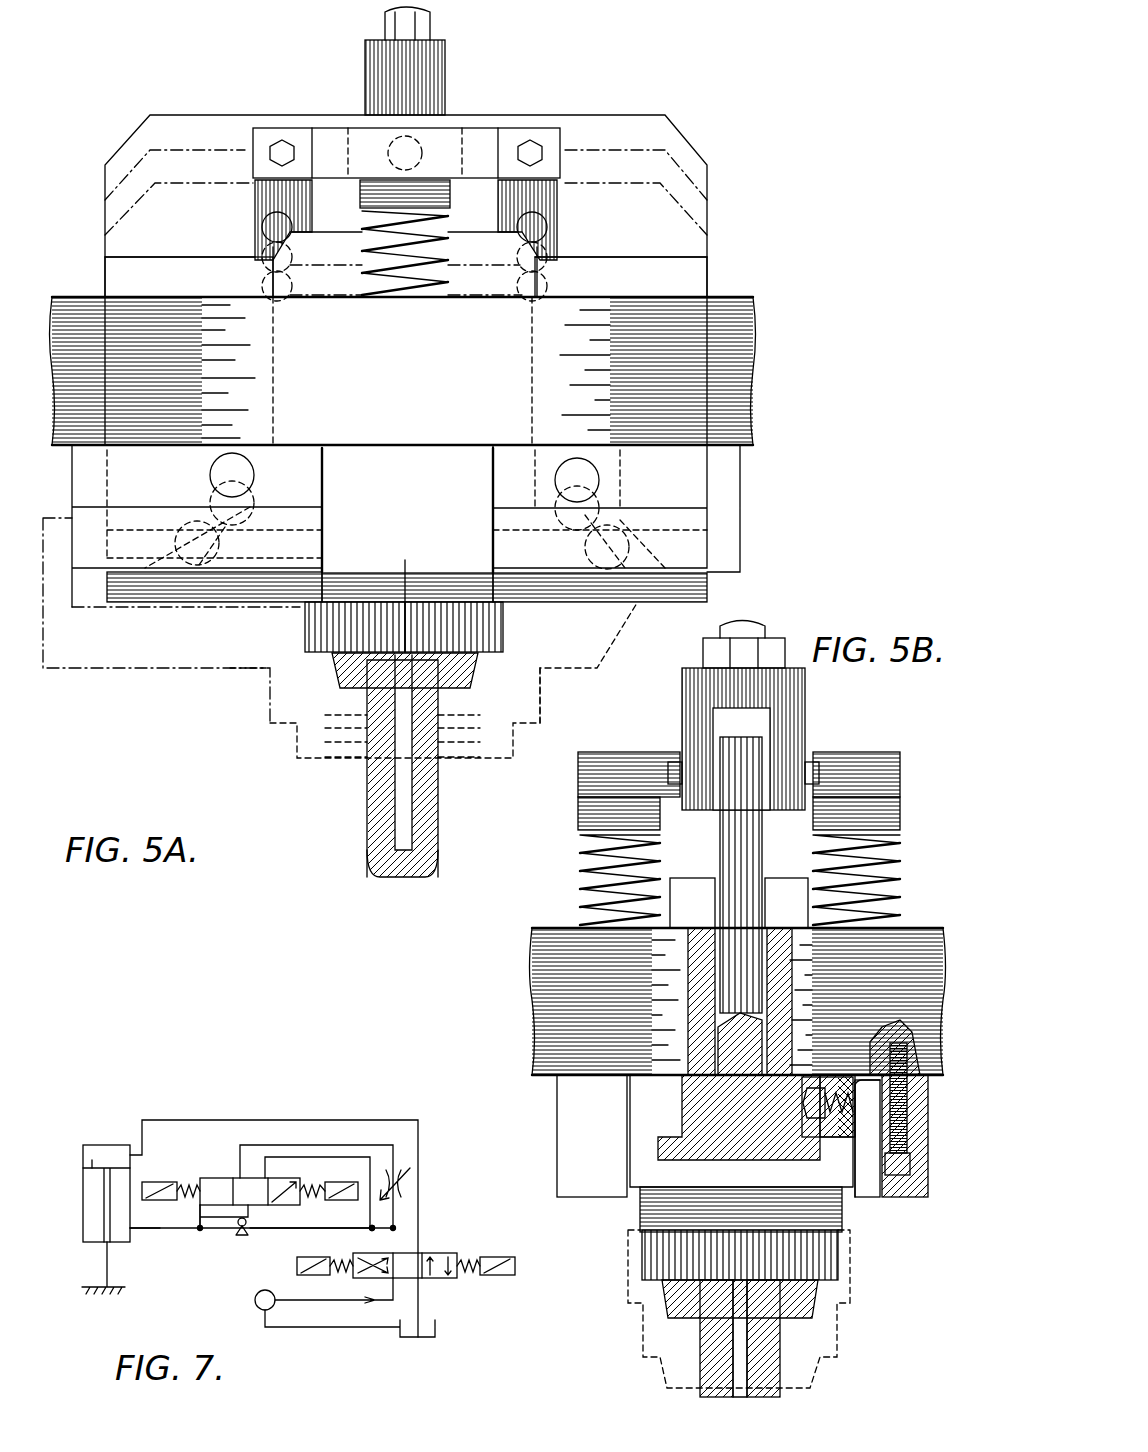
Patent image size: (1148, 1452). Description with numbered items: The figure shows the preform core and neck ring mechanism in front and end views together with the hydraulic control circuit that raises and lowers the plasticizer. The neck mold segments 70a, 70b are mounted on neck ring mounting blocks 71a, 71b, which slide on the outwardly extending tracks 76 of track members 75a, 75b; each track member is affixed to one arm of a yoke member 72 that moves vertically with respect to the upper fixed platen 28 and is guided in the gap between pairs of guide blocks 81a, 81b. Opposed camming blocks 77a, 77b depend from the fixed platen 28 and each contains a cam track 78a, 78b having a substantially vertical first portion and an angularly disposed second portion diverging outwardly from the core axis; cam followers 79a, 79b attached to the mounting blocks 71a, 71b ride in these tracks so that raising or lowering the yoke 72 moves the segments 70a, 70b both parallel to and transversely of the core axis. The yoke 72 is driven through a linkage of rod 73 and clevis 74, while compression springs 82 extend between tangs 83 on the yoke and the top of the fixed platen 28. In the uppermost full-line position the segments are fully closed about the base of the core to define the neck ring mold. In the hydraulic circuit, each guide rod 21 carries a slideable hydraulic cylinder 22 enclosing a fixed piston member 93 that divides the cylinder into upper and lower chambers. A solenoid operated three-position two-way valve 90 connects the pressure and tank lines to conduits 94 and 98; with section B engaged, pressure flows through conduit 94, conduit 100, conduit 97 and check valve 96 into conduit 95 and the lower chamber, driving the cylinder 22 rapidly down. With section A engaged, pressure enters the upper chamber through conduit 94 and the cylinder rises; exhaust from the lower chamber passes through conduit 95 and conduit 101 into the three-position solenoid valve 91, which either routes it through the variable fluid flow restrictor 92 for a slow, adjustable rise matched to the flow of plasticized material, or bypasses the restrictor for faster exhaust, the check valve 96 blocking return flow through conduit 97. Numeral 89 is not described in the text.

In FIG. 7, the guide rod 21 is at (104, 1262).
In FIG. 7, the hydraulic cylinder 22 is at (83, 1180).
In FIG. 5A, the upper fixed platen 28 is at (740, 390).
In FIG. 5B, the upper fixed platen 28 is at (532, 988).
In FIG. 5A, the neck mold segment 70a is at (340, 655).
In FIG. 5B, the neck mold segment 70a is at (665, 1300).
In FIG. 5A, the neck mold segment 70b is at (470, 655).
In FIG. 5A, the neck ring mounting block 71a is at (322, 565).
In FIG. 5B, the neck ring mounting block 71a is at (640, 1170).
In FIG. 5A, the neck ring mounting block 71b is at (493, 565).
In FIG. 5A, the yoke member 72 is at (690, 143).
In FIG. 5B, the yoke member 72 is at (720, 836).
In FIG. 5A, the rod 73 is at (432, 24).
In FIG. 5B, the rod 73 is at (762, 625).
In FIG. 5A, the clevis 74 is at (448, 98).
In FIG. 5B, the clevis 74 is at (790, 712).
In FIG. 5A, the track member 75a is at (322, 538).
In FIG. 5B, the track member 75a is at (798, 1150).
In FIG. 5A, the track member 75b is at (493, 538).
In FIG. 5B, the track 76 is at (662, 1152).
In FIG. 5A, the camming block 77a is at (75, 492).
In FIG. 5B, the camming block 77a is at (560, 1105).
In FIG. 5A, the camming block 77b is at (705, 482).
In FIG. 5A, the cam track 78a is at (215, 495).
In FIG. 5A, the cam track 78b is at (600, 508).
In FIG. 5A, the cam follower 79a is at (232, 468).
In FIG. 5B, the cam follower 79a is at (830, 1115).
In FIG. 5A, the cam follower 79b is at (578, 473).
In FIG. 5A, the guide block 81a is at (105, 270).
In FIG. 5B, the guide block 81a is at (692, 903).
In FIG. 5A, the guide block 81b is at (690, 272).
In FIG. 5B, the guide block 81b is at (786, 903).
In FIG. 5A, the compression spring 82 is at (448, 285).
In FIG. 5B, the compression spring 82 is at (580, 876).
In FIG. 5A, the tang 83 is at (450, 188).
In FIG. 5B, the tang 83 is at (580, 782).
In FIG. 7, the directional control valve 89 is at (372, 1160).
In FIG. 7, the solenoid operated 3-position two-way valve 90 is at (457, 1260).
In FIG. 7, the three-position solenoid valve 91 is at (222, 1176).
In FIG. 7, the variable fluid flow restrictor 92 is at (402, 1185).
In FIG. 7, the fixed piston member 93 is at (92, 1166).
In FIG. 7, the conduit 94 is at (245, 1120).
In FIG. 7, the conduit 95 is at (155, 1230).
In FIG. 7, the check valve 96 is at (246, 1236).
In FIG. 7, the conduit 97 is at (307, 1230).
In FIG. 7, the conduit 98 is at (302, 1145).
In FIG. 7, the conduit 100 is at (377, 1226).
In FIG. 7, the conduit 101 is at (214, 1225).